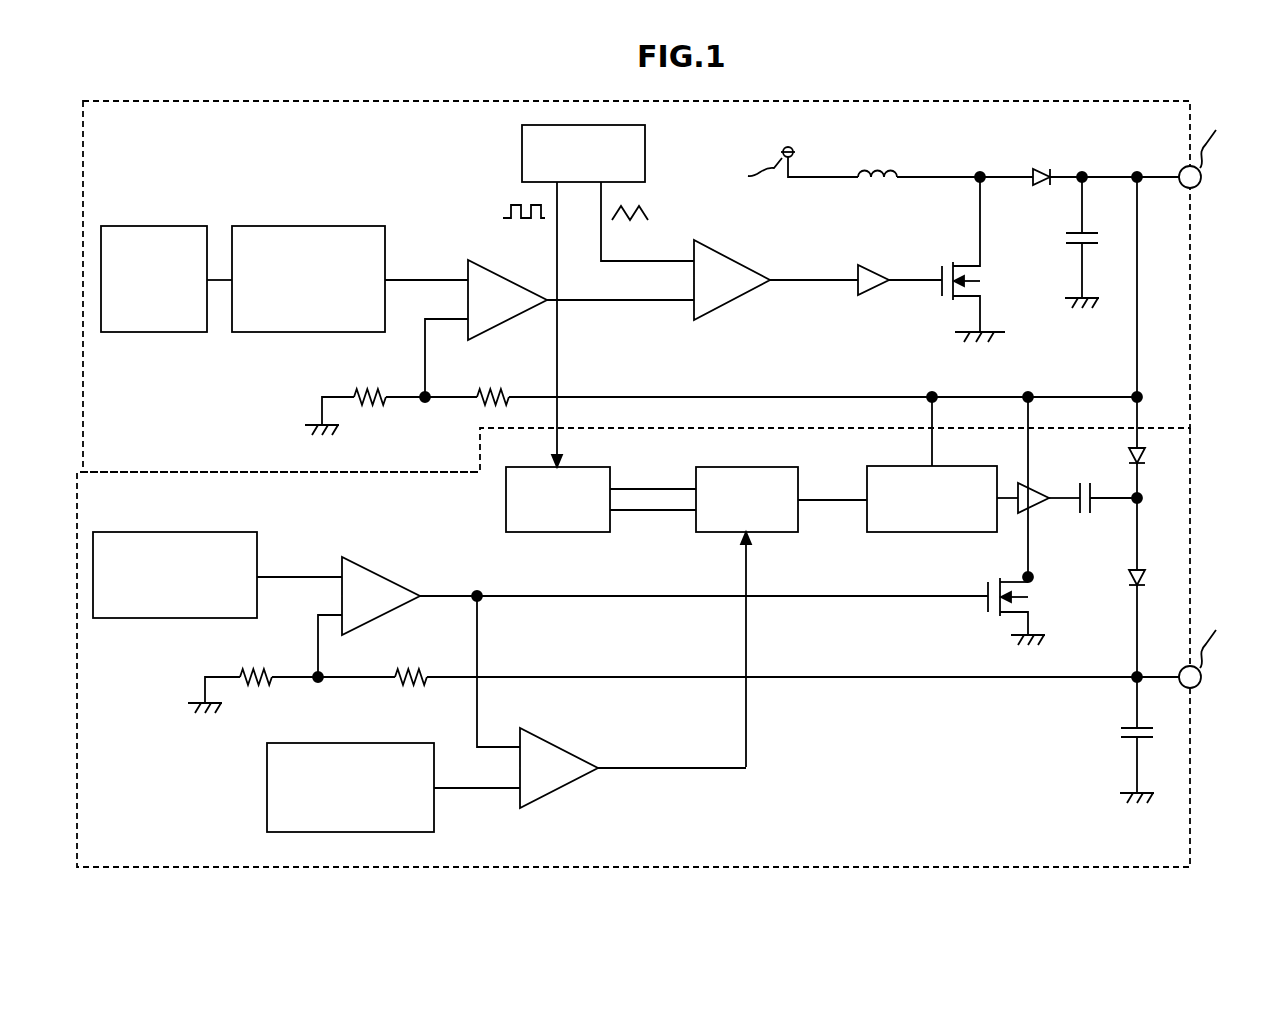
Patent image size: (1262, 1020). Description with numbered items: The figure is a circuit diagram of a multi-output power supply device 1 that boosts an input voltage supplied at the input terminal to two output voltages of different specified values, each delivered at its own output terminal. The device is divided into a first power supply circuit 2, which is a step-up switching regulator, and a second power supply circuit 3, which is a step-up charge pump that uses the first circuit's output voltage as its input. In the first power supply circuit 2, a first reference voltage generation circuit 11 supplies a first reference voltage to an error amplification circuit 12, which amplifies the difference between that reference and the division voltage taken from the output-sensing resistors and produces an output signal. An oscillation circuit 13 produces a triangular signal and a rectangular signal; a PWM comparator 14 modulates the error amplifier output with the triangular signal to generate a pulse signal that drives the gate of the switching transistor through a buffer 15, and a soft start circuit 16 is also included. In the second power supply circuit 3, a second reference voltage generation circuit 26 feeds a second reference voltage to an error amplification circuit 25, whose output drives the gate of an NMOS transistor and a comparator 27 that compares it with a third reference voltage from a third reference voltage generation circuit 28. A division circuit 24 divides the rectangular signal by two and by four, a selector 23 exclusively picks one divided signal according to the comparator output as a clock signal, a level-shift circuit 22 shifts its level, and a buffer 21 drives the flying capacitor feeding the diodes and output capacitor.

The multi-output power supply device 1 is at (952, 85).
The first power supply circuit 2 is at (1132, 104).
The second power supply circuit 3 is at (1170, 508).
The first reference voltage generation circuit 11 is at (321, 226).
The error amplification circuit 12 is at (512, 320).
The oscillation circuit 13 is at (522, 150).
The PWM comparator 14 is at (737, 303).
The buffer 15 is at (877, 266).
The soft start circuit 16 is at (168, 226).
The buffer 21 is at (1033, 486).
The level-shift circuit 22 is at (897, 532).
The selector 23 is at (710, 532).
The division circuit 24 is at (543, 532).
The error amplification circuit 25 is at (395, 609).
The second reference voltage generation circuit 26 is at (198, 532).
The comparator 27 is at (566, 788).
The third reference voltage generation circuit 28 is at (373, 743).